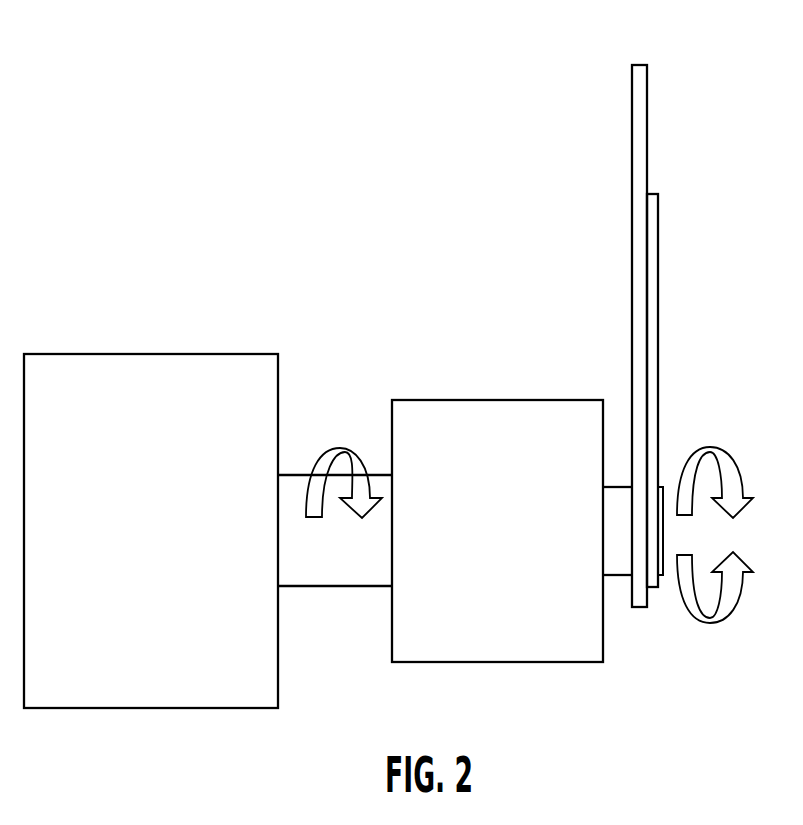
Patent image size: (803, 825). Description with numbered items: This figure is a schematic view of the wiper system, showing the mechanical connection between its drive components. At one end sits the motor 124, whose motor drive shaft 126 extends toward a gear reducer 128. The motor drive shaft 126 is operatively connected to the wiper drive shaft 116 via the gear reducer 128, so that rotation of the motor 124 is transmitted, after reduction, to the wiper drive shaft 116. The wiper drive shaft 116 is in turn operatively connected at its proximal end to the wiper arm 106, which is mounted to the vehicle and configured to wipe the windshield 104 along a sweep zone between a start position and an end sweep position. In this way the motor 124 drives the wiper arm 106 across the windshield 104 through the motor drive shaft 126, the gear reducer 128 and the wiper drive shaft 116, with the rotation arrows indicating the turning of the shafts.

The windshield 104 is at (638, 100).
The wiper arm 106 is at (658, 257).
The wiper drive shaft 116 is at (615, 560).
The motor 124 is at (77, 683).
The motor drive shaft 126 is at (344, 568).
The gear reducer 128 is at (480, 435).